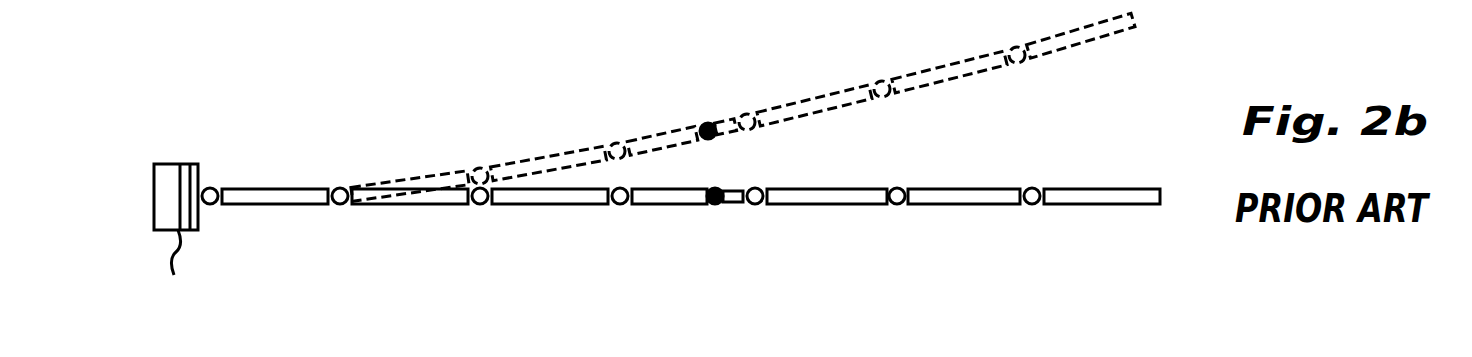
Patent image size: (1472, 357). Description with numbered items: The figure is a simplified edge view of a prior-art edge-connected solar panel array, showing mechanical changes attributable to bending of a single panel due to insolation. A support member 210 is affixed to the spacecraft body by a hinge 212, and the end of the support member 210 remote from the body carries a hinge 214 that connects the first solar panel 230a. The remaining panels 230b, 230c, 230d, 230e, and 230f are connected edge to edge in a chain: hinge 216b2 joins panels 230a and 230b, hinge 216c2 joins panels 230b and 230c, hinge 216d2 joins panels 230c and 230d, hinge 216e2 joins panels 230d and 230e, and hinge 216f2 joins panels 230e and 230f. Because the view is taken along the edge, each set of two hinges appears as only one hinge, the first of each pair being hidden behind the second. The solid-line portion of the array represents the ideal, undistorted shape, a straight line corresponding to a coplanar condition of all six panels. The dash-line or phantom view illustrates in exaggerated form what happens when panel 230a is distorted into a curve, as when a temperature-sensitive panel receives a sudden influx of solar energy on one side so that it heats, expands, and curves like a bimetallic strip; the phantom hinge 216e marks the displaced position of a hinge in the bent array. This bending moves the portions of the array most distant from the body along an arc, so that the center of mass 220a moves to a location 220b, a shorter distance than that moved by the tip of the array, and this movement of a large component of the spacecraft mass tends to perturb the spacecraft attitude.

The support member 210 is at (273, 205).
The hinge 212 is at (209, 187).
The hinge 214 is at (338, 187).
The hinge 216b2 is at (480, 205).
The hinge 216c2 is at (620, 205).
The hinge 216d2 is at (763, 188).
The hinge 216e2 is at (897, 206).
The hinge 216f2 is at (1033, 206).
The pivot joint (displaced position) 216e is at (880, 80).
The center of mass 220a is at (717, 210).
The location 220b is at (713, 121).
The solar panel 230a is at (397, 205).
The solar panel 230b is at (571, 205).
The solar panel 230c is at (670, 188).
The solar panel 230d is at (857, 205).
The solar panel 230e is at (938, 162).
The solar panel 230f is at (1075, 163).